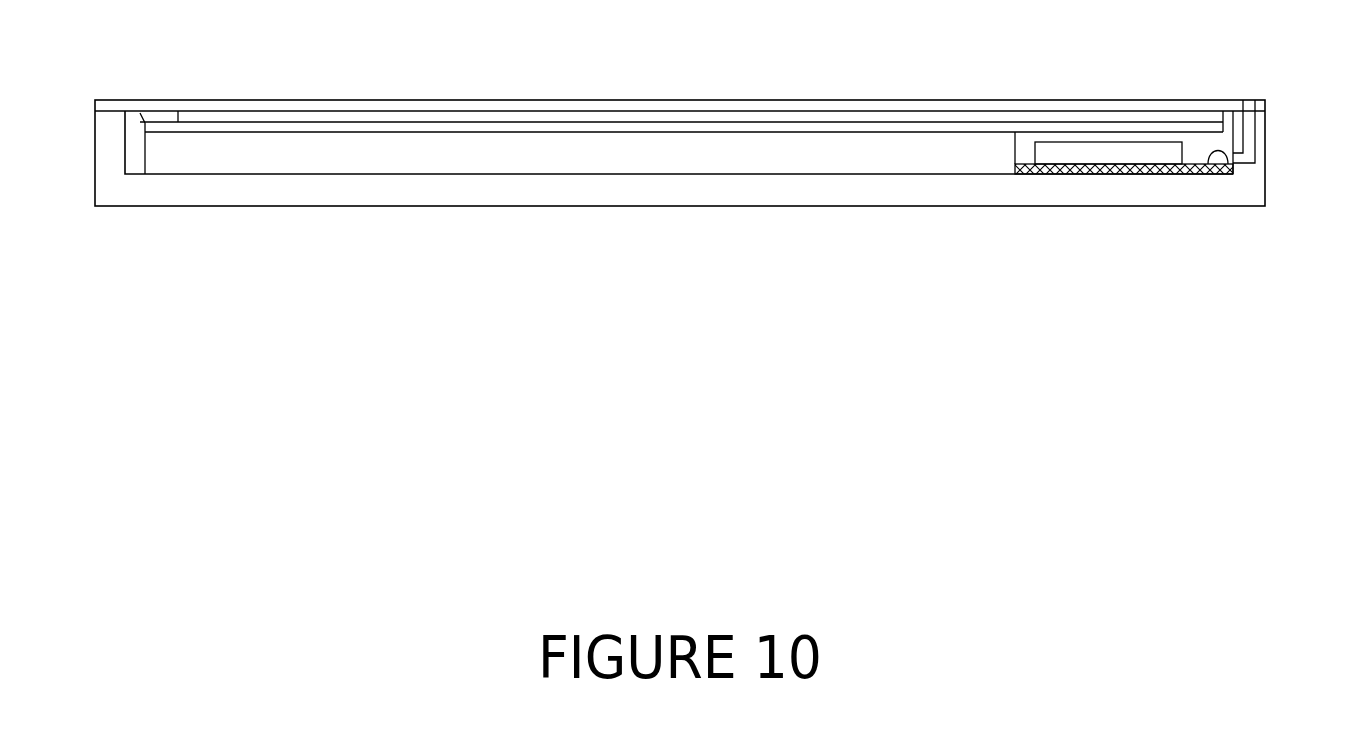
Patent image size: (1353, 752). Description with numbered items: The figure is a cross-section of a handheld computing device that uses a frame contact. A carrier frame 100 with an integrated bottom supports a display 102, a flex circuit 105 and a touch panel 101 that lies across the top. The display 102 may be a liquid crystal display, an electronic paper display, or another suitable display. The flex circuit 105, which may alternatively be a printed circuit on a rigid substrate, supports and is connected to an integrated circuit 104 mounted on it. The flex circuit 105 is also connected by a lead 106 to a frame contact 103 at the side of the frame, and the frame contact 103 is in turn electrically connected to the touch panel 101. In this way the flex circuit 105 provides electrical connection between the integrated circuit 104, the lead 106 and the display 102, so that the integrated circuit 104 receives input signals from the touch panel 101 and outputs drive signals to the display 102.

The carrier frame 100 is at (94, 175).
The touch panel 101 is at (222, 100).
The display 102 is at (487, 166).
The frame contact 103 is at (1258, 132).
The integrated circuit 104 is at (1057, 150).
The flex circuit 105 is at (1155, 175).
The lead 106 is at (1209, 154).